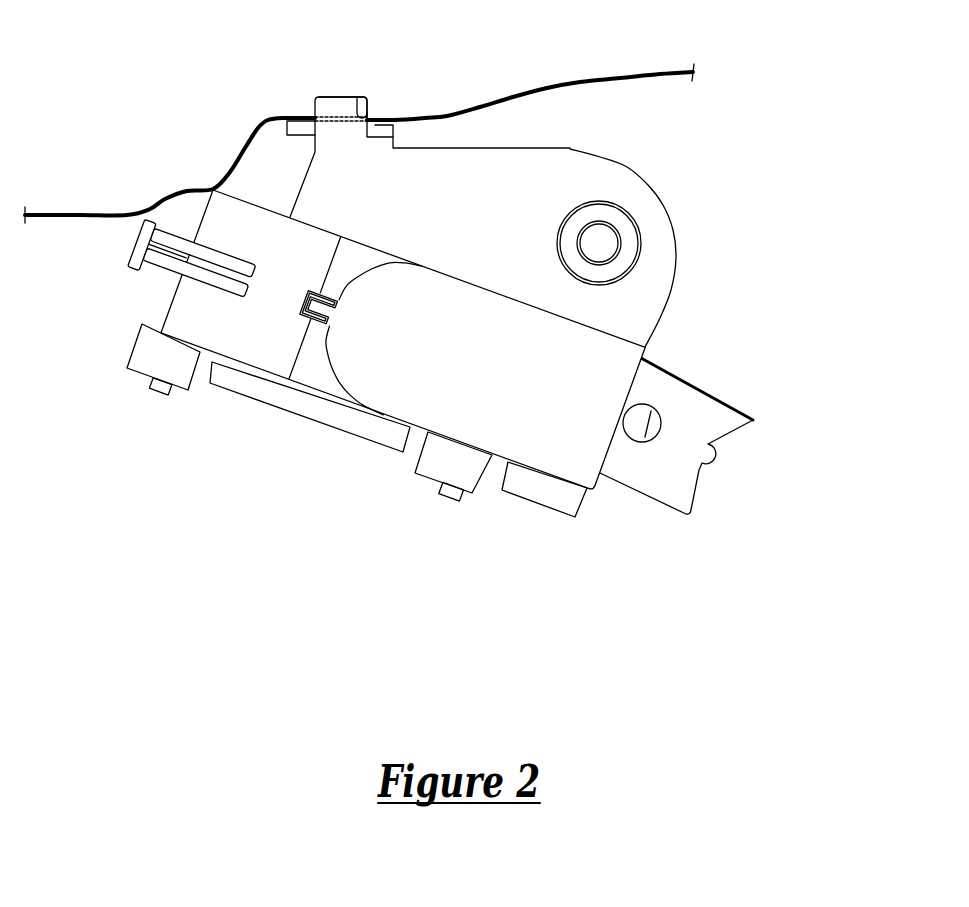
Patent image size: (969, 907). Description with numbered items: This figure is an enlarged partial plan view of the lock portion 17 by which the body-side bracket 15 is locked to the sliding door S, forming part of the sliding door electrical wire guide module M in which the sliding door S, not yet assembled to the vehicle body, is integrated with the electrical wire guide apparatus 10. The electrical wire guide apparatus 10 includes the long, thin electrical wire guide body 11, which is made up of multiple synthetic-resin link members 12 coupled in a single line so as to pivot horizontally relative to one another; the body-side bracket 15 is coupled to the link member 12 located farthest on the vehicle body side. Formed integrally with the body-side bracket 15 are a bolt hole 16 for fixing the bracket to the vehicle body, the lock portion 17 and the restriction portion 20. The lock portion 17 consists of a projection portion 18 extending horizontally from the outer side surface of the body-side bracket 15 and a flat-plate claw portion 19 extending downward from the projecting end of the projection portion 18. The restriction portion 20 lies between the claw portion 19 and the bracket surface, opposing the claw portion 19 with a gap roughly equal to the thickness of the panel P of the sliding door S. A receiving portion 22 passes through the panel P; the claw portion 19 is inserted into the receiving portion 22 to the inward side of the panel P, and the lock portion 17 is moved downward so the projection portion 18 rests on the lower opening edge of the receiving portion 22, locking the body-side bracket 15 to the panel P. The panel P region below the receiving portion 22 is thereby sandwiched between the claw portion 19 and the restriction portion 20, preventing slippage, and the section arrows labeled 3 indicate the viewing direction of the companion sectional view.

The electrical wire guide apparatus 10 is at (767, 263).
The electrical wire guide body 11 is at (708, 400).
The link member 12 is at (712, 414).
The body-side bracket 15 is at (257, 343).
The bolt hole 16 is at (608, 258).
The lock portion 17 is at (302, 70).
The projection portion 18 is at (322, 111).
The claw portion 19 is at (323, 101).
The restriction portion 20 is at (383, 130).
The receiving portion 22 is at (358, 98).
The panel P is at (359, 135).
The sliding door S is at (126, 96).
The sliding door electrical wire guide module M is at (797, 35).
The section line for FIG. 3 is at (340, 75).